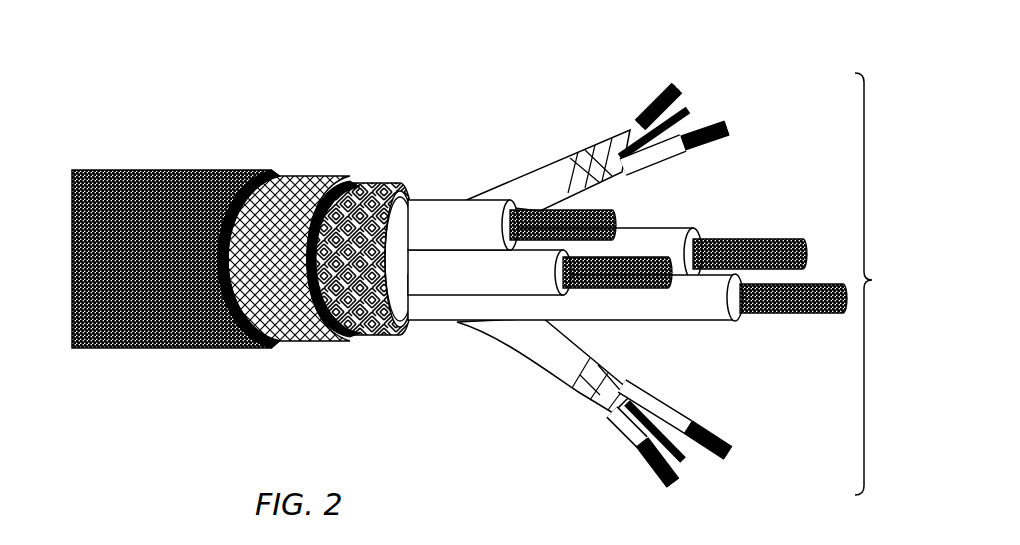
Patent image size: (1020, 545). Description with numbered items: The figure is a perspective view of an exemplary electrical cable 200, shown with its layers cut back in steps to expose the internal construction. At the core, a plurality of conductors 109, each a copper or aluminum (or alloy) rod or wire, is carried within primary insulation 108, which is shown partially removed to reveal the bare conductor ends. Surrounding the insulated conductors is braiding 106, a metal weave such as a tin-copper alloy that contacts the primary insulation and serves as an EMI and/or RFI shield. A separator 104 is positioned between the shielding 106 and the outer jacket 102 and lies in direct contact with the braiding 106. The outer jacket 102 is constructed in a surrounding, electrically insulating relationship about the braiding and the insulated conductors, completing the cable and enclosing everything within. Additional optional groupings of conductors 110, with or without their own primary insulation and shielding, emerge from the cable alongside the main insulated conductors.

The outer jacket 102 is at (183, 175).
The separator 104 is at (295, 185).
The braiding 106 is at (388, 185).
The primary insulation 108 is at (465, 222).
The conductor 109 is at (797, 245).
The groupings of conductors 110 is at (629, 130).
The electrical cable 200 is at (763, 95).